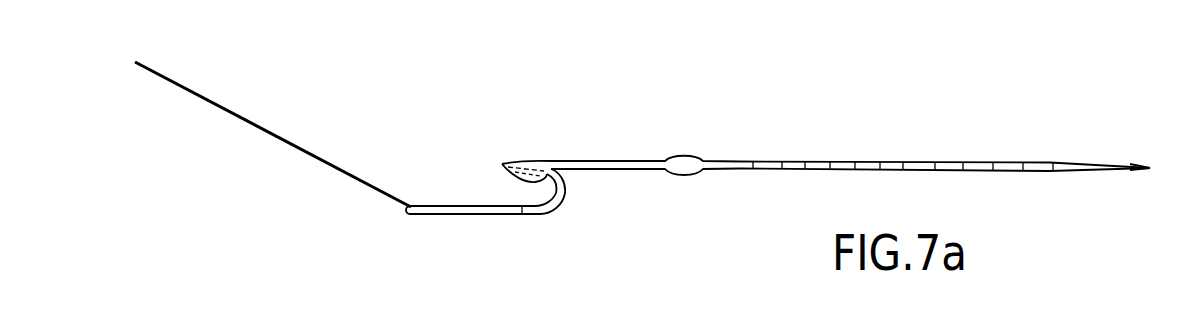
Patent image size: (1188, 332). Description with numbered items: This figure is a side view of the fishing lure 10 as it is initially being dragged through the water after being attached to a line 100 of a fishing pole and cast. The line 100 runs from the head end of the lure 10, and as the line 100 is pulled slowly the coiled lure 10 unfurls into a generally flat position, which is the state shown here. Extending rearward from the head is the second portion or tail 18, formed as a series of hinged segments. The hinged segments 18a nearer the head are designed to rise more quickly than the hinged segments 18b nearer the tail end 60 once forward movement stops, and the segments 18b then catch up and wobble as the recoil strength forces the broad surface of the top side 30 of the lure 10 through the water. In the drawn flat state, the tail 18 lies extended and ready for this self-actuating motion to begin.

The line 100 is at (225, 103).
The fishing lure 10 is at (790, 143).
The second portion (tail) 18 is at (863, 126).
The hinged segments nearer the head 18a is at (773, 160).
The hinged segments nearer the tail end 18b is at (1033, 160).
The top side 30 is at (843, 160).
The tail end 60 is at (1148, 165).